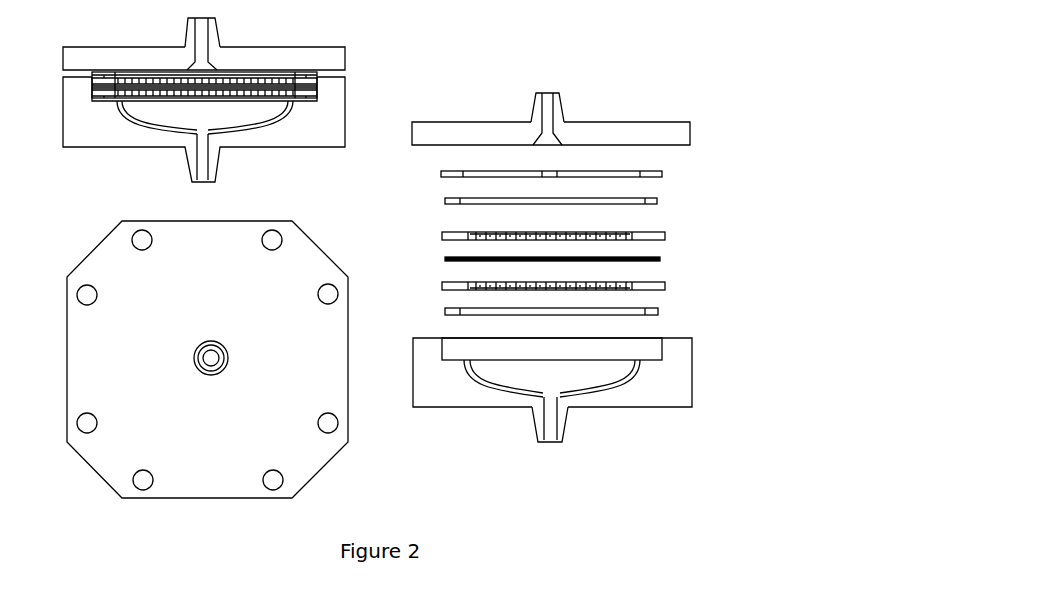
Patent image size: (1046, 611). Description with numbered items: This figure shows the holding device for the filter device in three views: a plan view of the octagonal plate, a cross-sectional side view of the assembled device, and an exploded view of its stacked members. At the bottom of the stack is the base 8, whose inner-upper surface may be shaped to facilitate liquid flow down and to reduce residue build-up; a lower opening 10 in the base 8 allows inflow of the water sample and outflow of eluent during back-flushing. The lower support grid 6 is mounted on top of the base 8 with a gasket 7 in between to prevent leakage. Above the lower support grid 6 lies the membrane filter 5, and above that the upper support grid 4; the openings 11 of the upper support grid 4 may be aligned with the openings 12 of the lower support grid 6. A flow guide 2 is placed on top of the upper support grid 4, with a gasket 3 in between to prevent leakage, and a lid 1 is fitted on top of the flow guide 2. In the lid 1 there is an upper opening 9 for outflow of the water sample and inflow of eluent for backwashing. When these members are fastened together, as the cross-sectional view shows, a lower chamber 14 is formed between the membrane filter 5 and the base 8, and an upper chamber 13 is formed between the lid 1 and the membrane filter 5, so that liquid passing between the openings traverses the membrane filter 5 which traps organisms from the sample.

The lid 1 is at (640, 130).
The flow guide 2 is at (652, 172).
The gasket 3 is at (653, 200).
The upper support grid 4 is at (662, 234).
The membrane filter 5 is at (660, 259).
The lower support grid 6 is at (660, 286).
The gasket 7 is at (658, 309).
The base 8 is at (672, 350).
The upper opening 9 is at (548, 107).
The lower opening 10 is at (552, 427).
The openings of the upper support grid 11 is at (500, 234).
The openings of the lower support grid 12 is at (500, 288).
The upper chamber 13 is at (187, 72).
The lower chamber 14 is at (205, 120).